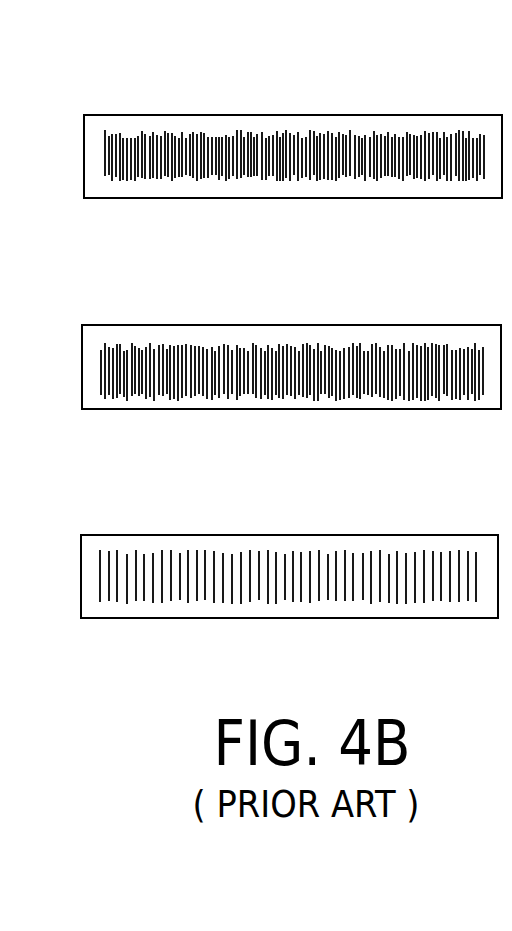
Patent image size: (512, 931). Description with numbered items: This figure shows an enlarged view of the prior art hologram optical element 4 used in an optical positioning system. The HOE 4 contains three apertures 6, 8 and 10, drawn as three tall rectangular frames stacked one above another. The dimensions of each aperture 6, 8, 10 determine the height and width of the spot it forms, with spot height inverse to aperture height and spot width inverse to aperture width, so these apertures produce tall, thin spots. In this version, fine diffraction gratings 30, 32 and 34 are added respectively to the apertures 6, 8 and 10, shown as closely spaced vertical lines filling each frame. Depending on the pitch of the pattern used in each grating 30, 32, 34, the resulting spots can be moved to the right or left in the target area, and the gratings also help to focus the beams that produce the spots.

The hologram optical element 4 is at (314, 100).
The aperture 6 is at (112, 178).
The fine diffraction grating 30 is at (185, 148).
The aperture 8 is at (107, 383).
The fine diffraction grating 32 is at (383, 367).
The aperture 10 is at (112, 588).
The fine diffraction grating 34 is at (348, 572).